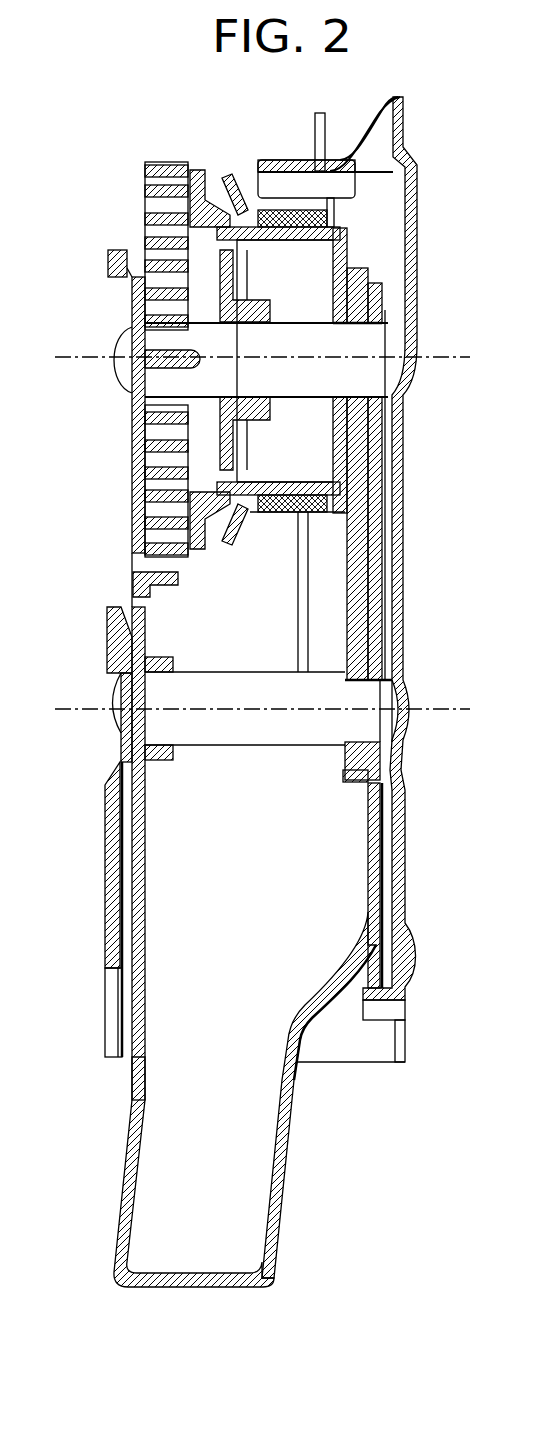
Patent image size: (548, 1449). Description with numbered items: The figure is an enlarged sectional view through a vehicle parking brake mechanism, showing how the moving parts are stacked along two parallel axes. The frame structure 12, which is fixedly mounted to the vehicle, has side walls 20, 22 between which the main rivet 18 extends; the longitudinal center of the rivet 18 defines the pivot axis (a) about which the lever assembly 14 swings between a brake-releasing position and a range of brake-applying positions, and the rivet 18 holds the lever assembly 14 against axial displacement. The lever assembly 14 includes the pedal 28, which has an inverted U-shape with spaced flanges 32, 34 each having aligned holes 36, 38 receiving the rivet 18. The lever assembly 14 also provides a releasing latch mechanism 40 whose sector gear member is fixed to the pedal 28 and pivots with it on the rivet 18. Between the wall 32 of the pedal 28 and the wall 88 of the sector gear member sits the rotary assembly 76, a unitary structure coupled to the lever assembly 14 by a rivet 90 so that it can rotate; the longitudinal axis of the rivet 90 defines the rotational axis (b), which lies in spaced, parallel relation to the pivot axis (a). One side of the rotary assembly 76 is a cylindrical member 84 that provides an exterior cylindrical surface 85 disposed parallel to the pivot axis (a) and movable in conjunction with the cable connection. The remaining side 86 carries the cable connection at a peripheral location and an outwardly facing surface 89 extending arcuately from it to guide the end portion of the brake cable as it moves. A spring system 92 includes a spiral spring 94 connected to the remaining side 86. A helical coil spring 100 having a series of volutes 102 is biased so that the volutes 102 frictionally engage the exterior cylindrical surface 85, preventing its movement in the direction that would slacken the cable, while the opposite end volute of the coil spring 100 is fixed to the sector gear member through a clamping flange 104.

The frame structure 12 is at (405, 888).
The lever assembly 14 is at (292, 1148).
The main rivet 18 is at (262, 745).
The side wall 20 is at (118, 860).
The side wall 22 is at (398, 830).
The pedal 28 is at (285, 1228).
The flange 32 is at (150, 972).
The flange 34 is at (367, 888).
The hole 36 is at (172, 660).
The hole 38 is at (395, 665).
The releasing latch mechanism 40 is at (372, 265).
The rotary assembly 76 is at (145, 230).
The cylindrical member 84 is at (370, 213).
The exterior cylindrical surface 85 is at (402, 497).
The remaining side 86 is at (200, 170).
The wall 88 is at (343, 642).
The outwardly facing surface 89 is at (218, 175).
The rivet 90 is at (327, 350).
The spring system 92 is at (150, 160).
The spiral spring 94 is at (132, 537).
The helical coil spring 100 is at (275, 210).
The volutes 102 is at (312, 585).
The clamping flange 104 is at (322, 115).
The pivot axis a is at (438, 712).
The rotational axis b is at (60, 366).